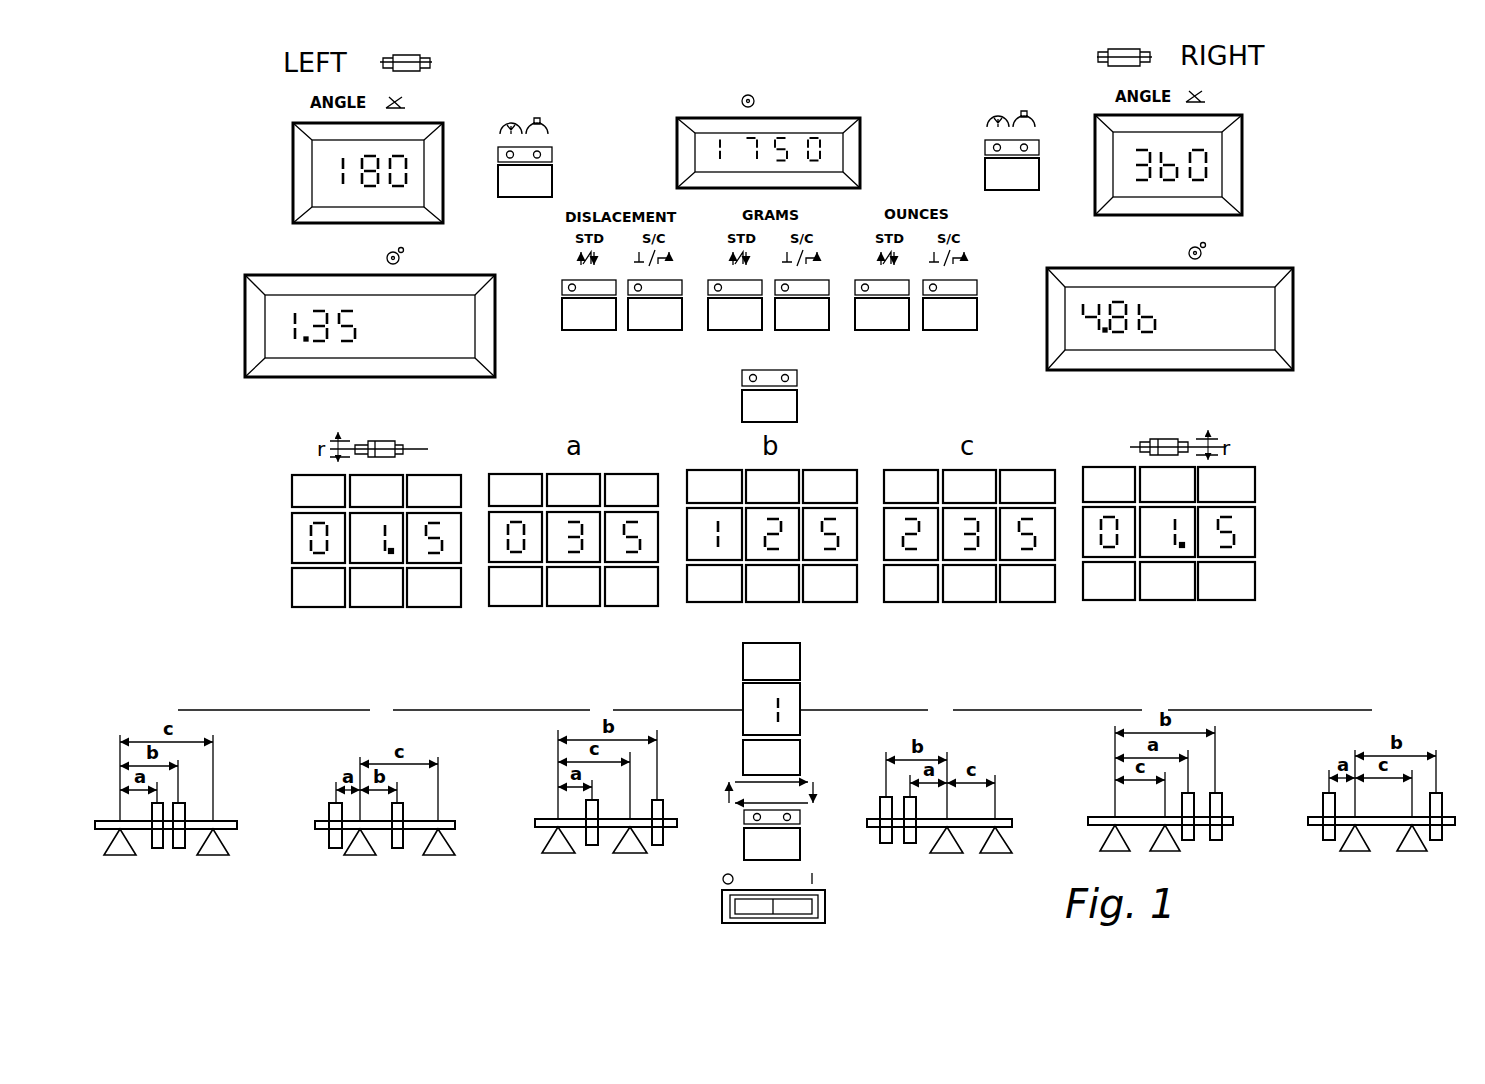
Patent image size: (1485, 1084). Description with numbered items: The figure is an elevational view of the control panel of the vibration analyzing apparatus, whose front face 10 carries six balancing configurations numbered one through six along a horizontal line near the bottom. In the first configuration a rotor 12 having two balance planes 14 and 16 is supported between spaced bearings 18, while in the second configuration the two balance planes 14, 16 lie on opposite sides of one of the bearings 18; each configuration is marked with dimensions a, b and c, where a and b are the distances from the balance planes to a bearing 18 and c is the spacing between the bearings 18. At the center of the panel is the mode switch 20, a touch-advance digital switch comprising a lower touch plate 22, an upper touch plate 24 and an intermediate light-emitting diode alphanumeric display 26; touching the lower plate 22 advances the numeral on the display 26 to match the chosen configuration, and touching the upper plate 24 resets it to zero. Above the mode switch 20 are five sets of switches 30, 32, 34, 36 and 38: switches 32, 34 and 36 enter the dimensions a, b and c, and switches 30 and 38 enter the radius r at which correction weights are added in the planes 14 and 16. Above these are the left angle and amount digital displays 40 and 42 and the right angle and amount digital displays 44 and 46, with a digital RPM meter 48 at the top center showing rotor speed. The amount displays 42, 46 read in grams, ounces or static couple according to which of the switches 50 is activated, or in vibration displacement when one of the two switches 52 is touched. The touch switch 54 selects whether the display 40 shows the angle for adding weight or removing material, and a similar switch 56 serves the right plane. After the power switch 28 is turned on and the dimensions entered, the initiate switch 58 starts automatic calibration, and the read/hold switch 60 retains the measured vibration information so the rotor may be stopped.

The front face 10 is at (1410, 713).
The rotor 12 is at (225, 821).
The balance plane 14 is at (158, 848).
The balance plane 16 is at (180, 848).
The bearings 18 is at (125, 852).
The mode switch 20 is at (788, 709).
The lower touch plate 22 is at (748, 756).
The upper touch plate 24 is at (748, 668).
The light-emitting diode alphanumeric display 26 is at (797, 706).
The power switch 28 is at (810, 903).
The switch 30 is at (377, 611).
The switch 32 is at (575, 610).
The switch 34 is at (772, 604).
The switch 36 is at (973, 606).
The switch 38 is at (1167, 604).
The left angle digital display 40 is at (316, 154).
The left amount digital display 42 is at (267, 308).
The right angle digital display 44 is at (1212, 133).
The right amount digital display 46 is at (1262, 290).
The digital RPM meter 48 is at (828, 138).
The switches 50 is at (935, 325).
The switches 52 is at (645, 327).
The touch switch 54 is at (540, 172).
The switch 56 is at (985, 172).
The initiate switch 58 is at (797, 849).
The read/hold switch 60 is at (792, 386).